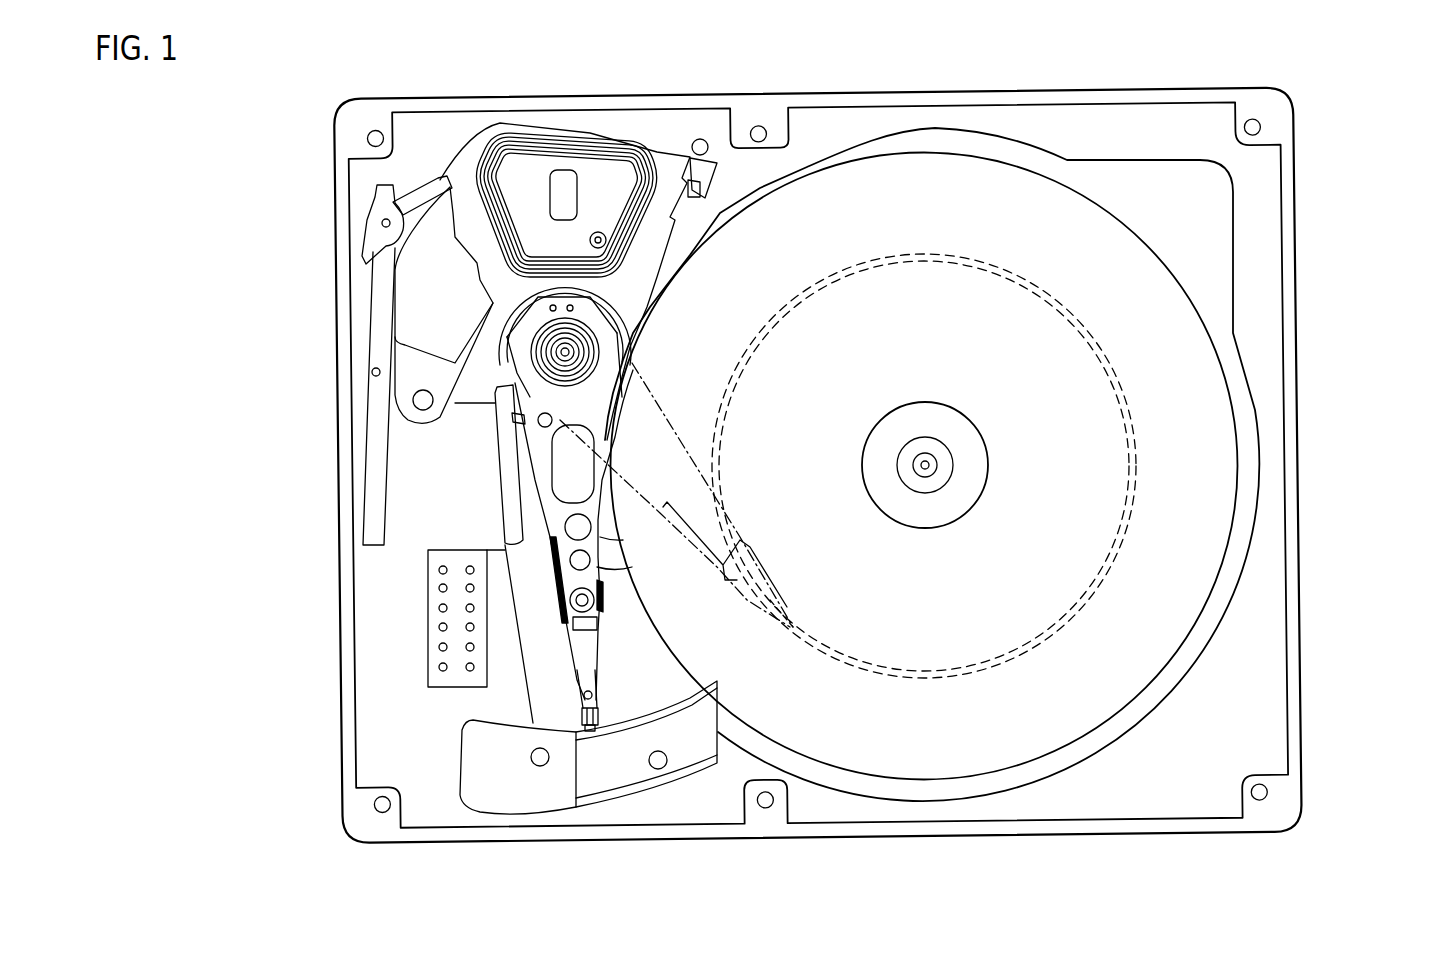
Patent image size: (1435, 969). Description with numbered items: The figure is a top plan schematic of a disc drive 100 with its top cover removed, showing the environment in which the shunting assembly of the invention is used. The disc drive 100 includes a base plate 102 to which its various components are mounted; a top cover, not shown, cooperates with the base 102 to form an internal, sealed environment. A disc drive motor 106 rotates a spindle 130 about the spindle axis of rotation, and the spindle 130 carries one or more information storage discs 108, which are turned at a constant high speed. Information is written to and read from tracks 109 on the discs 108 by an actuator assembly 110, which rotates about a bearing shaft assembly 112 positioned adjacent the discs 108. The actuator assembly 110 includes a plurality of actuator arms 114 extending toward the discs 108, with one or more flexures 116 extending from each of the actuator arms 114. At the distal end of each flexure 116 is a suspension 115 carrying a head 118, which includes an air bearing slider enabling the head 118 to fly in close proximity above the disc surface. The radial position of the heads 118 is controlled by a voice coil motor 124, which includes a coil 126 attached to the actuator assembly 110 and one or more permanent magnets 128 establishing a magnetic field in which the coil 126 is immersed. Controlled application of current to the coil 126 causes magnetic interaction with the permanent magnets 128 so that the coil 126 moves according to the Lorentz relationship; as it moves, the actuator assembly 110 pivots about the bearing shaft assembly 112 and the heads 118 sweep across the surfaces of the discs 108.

The disc drive 100 is at (1166, 842).
The base plate 102 is at (1303, 604).
The disc drive motor 106 is at (960, 410).
The information storage disc 108 is at (1015, 180).
The tracks 109 is at (910, 678).
The actuator assembly 110 is at (650, 308).
The bearing shaft assembly 112 is at (570, 352).
The actuator arm 114 is at (547, 487).
The suspension 115 is at (599, 708).
The flexure 116 is at (589, 650).
The head 118 is at (589, 729).
The voice coil motor 124 is at (528, 132).
The coil 126 is at (613, 152).
The permanent magnet 128 is at (412, 315).
The spindle 130 is at (937, 463).